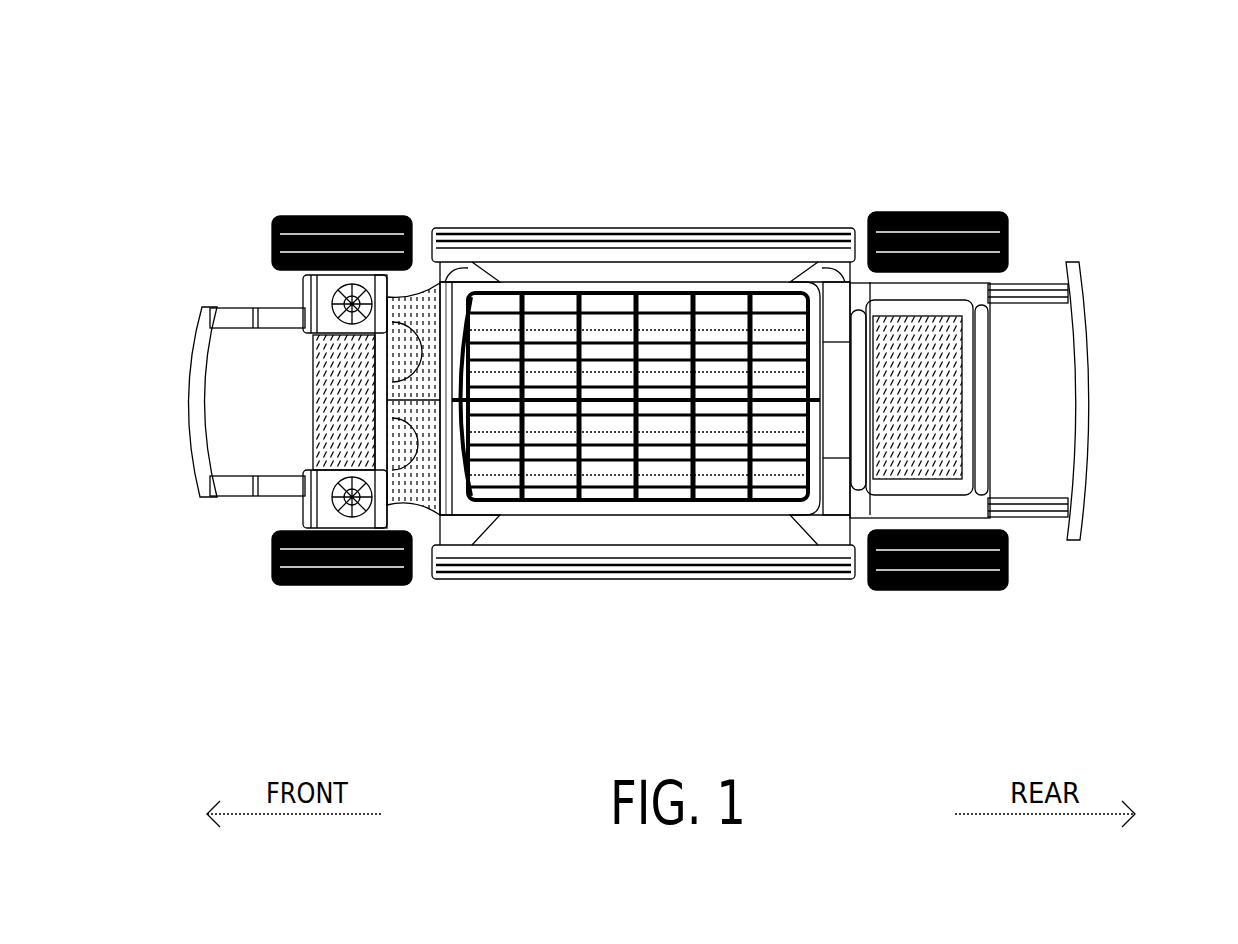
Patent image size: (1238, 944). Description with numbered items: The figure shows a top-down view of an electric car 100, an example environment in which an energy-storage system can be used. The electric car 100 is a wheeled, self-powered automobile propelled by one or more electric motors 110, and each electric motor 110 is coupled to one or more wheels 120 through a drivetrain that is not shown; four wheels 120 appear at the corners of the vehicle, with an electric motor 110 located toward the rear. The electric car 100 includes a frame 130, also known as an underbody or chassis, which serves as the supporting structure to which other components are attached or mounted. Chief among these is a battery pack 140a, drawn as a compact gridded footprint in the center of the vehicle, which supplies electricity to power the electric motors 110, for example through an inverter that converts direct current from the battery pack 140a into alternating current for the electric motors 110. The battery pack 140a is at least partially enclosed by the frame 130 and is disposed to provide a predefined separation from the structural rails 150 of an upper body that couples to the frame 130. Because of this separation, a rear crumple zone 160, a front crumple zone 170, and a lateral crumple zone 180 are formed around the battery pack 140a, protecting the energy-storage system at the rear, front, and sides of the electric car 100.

The electric car 100 is at (311, 112).
The electric motor 110 is at (963, 453).
The wheel 120 is at (352, 214).
The frame 130 is at (815, 290).
The battery pack 140a is at (650, 508).
The structural rail 150 is at (665, 228).
The rear crumple zone 160 is at (1027, 344).
The front crumple zone 170 is at (305, 445).
The lateral crumple zone 180 is at (531, 276).